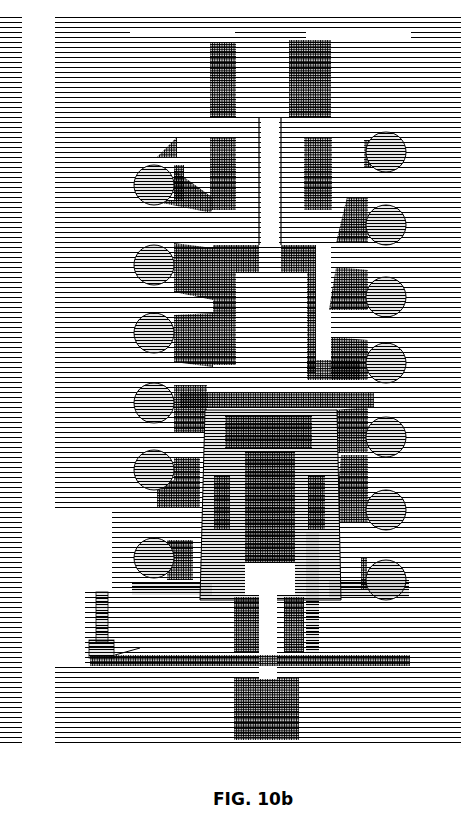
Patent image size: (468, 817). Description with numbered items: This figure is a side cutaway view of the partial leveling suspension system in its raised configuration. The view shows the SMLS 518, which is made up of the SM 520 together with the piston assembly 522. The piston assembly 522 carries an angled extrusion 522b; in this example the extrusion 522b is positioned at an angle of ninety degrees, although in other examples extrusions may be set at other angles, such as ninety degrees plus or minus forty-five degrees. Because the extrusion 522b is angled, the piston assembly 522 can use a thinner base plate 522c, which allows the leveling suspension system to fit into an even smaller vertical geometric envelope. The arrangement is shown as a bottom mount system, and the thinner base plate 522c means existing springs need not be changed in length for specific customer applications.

The SMLS 518 is at (78, 523).
The SM 520 is at (207, 522).
The piston assembly 522 is at (210, 671).
The angled extrusion 522b is at (90, 643).
The base plate 522c is at (203, 667).